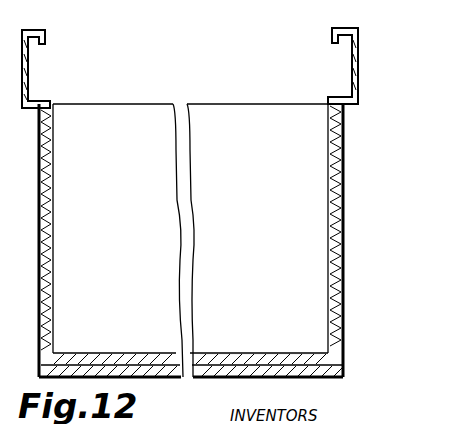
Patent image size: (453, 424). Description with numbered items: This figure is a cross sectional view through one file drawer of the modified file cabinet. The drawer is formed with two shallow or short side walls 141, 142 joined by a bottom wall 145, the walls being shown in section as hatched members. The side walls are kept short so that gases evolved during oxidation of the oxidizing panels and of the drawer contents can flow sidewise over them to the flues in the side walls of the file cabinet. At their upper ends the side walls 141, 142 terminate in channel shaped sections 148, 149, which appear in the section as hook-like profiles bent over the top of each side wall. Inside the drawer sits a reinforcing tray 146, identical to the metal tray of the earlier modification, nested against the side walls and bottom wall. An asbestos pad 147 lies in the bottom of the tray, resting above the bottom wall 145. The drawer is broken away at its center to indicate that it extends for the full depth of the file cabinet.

The side wall 141 is at (380, 191).
The side wall 142 is at (39, 210).
The bottom wall 145 is at (291, 377).
The reinforcing tray 146 is at (54, 286).
The asbestos pad 147 is at (284, 353).
The channel shaped section 148 is at (352, 67).
The channel shaped section 149 is at (28, 77).